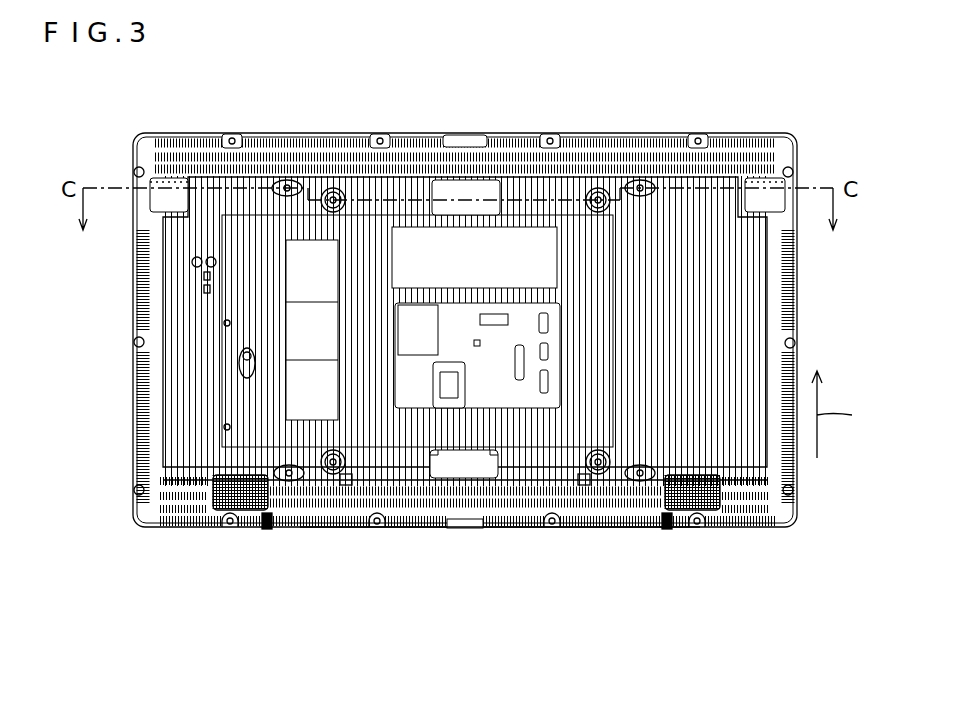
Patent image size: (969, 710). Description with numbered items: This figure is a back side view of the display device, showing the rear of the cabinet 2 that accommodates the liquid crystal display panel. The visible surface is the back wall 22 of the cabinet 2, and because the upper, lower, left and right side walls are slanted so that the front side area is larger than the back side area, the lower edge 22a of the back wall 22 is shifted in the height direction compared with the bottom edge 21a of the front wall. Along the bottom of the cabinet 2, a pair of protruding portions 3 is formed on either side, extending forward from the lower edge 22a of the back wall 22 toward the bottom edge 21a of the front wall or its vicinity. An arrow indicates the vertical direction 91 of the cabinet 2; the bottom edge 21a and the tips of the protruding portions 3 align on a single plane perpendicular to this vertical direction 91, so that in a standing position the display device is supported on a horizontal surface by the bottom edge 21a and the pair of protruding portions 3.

The cabinet 2 is at (727, 140).
The protruding portions 3 is at (266, 531).
The back wall 22 is at (372, 497).
The lower edge of the back wall 22a is at (425, 529).
The bottom edge of the front wall 21a is at (516, 541).
The vertical direction 91 is at (847, 414).